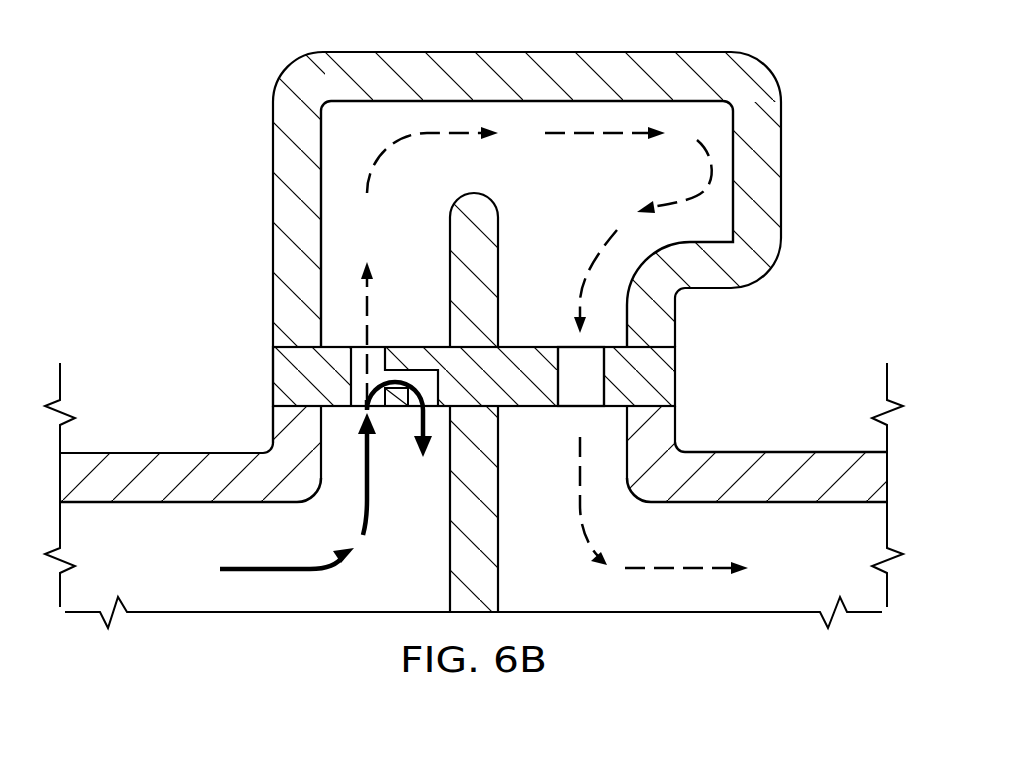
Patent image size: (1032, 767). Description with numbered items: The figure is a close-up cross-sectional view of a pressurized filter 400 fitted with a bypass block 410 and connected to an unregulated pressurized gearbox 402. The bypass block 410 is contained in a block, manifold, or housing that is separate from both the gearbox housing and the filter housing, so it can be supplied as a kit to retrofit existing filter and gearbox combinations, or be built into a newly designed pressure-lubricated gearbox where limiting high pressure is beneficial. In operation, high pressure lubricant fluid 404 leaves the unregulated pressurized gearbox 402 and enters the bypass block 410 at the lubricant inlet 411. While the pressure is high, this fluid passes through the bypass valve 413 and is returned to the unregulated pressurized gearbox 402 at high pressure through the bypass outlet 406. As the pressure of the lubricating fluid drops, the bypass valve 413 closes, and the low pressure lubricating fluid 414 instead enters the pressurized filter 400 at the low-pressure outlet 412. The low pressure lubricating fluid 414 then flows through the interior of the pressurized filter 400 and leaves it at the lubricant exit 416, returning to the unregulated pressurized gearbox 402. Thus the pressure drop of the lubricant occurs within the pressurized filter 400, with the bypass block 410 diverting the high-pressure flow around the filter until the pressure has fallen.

The pressurized filter 400 is at (273, 156).
The unregulated pressurized gearbox 402 is at (140, 452).
The high pressure lubricant fluid 404 is at (268, 566).
The bypass outlet 406 is at (415, 408).
The bypass block 410 is at (272, 366).
The lubricant inlet 411 is at (357, 407).
The low-pressure outlet 412 is at (378, 357).
The bypass valve 413 is at (363, 384).
The low pressure lubricating fluid 414 is at (582, 135).
The lubricant exit 416 is at (570, 360).